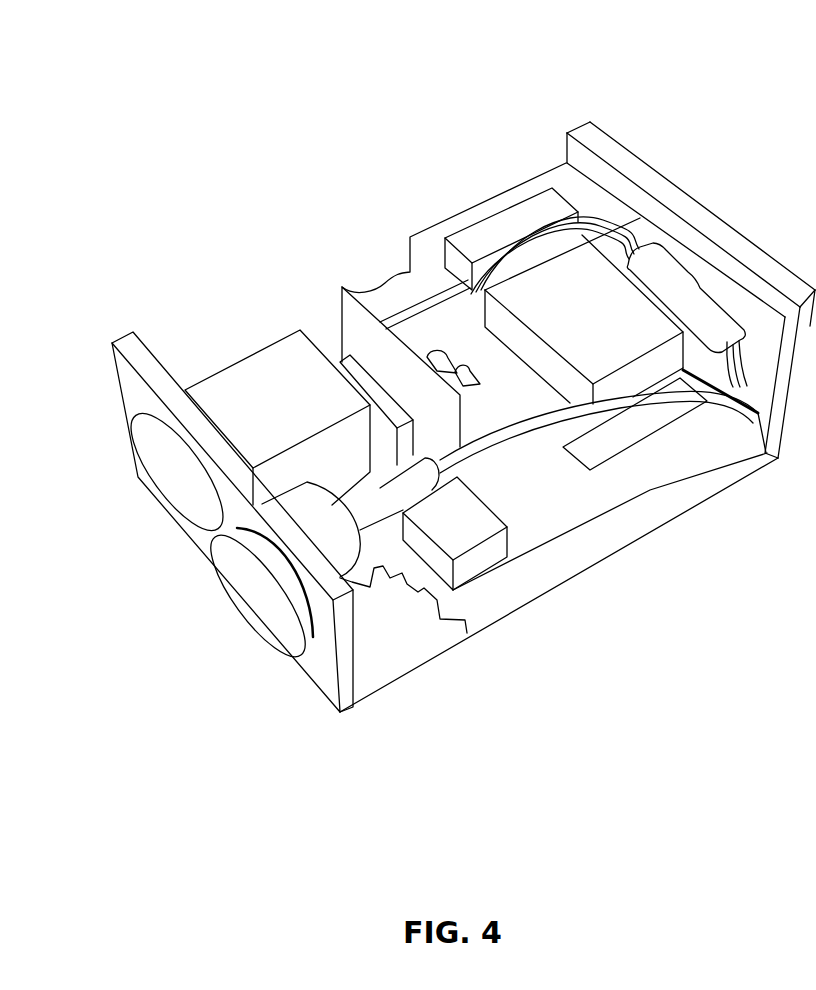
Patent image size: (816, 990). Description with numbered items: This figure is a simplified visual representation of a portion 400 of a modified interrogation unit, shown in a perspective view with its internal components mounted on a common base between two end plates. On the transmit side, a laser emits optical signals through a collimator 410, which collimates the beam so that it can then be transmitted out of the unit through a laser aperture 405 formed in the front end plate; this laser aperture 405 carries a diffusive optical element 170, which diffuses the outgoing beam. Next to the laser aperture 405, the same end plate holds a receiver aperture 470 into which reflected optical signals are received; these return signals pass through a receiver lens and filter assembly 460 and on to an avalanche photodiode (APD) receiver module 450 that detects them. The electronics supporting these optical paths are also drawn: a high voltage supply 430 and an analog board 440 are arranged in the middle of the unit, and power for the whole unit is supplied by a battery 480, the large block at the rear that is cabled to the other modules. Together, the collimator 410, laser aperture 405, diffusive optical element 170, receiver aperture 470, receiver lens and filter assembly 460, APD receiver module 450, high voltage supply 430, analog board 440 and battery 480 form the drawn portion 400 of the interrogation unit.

The portion of modified interrogation unit 400 is at (672, 64).
The laser aperture 405 is at (313, 637).
The receiver aperture 470 is at (137, 421).
The diffusive optical element 170 is at (260, 600).
The receiver lens and filter assembly 460 is at (292, 411).
The avalanche photodiode (APD) receiver module 450 is at (340, 361).
The analog board 440 is at (342, 287).
The high voltage supply 430 is at (487, 232).
The battery 480 is at (612, 329).
The collimator 410 is at (377, 517).